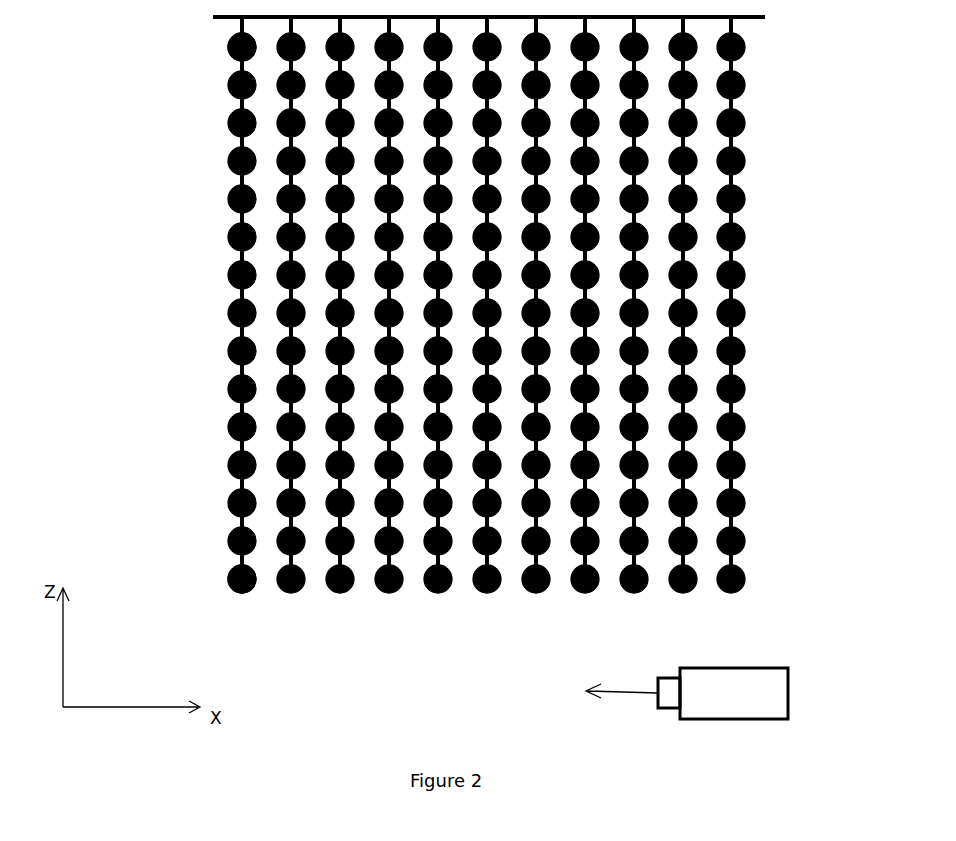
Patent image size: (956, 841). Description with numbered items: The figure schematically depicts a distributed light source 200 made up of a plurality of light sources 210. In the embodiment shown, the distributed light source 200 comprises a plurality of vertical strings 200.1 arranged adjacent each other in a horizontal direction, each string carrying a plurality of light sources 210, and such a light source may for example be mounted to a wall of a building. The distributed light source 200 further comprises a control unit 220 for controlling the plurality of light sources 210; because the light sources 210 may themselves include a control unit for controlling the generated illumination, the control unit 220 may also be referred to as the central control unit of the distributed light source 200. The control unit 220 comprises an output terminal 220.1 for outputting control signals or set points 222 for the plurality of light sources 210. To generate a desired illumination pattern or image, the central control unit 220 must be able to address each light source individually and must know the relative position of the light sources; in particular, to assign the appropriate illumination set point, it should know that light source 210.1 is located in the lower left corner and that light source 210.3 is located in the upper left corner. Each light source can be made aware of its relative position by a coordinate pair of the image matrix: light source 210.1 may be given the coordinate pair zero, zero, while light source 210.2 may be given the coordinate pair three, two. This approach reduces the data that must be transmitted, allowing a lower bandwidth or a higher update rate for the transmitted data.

The distributed light source 200 is at (425, 355).
The vertical string 200.1 is at (292, 410).
The light source 210 is at (214, 305).
The light source 210.1 is at (236, 592).
The light source 210.2 is at (350, 560).
The light source 210.3 is at (228, 43).
The control unit 220 is at (762, 692).
The output terminal 220.1 is at (668, 677).
The control signals or set points 222 is at (628, 695).